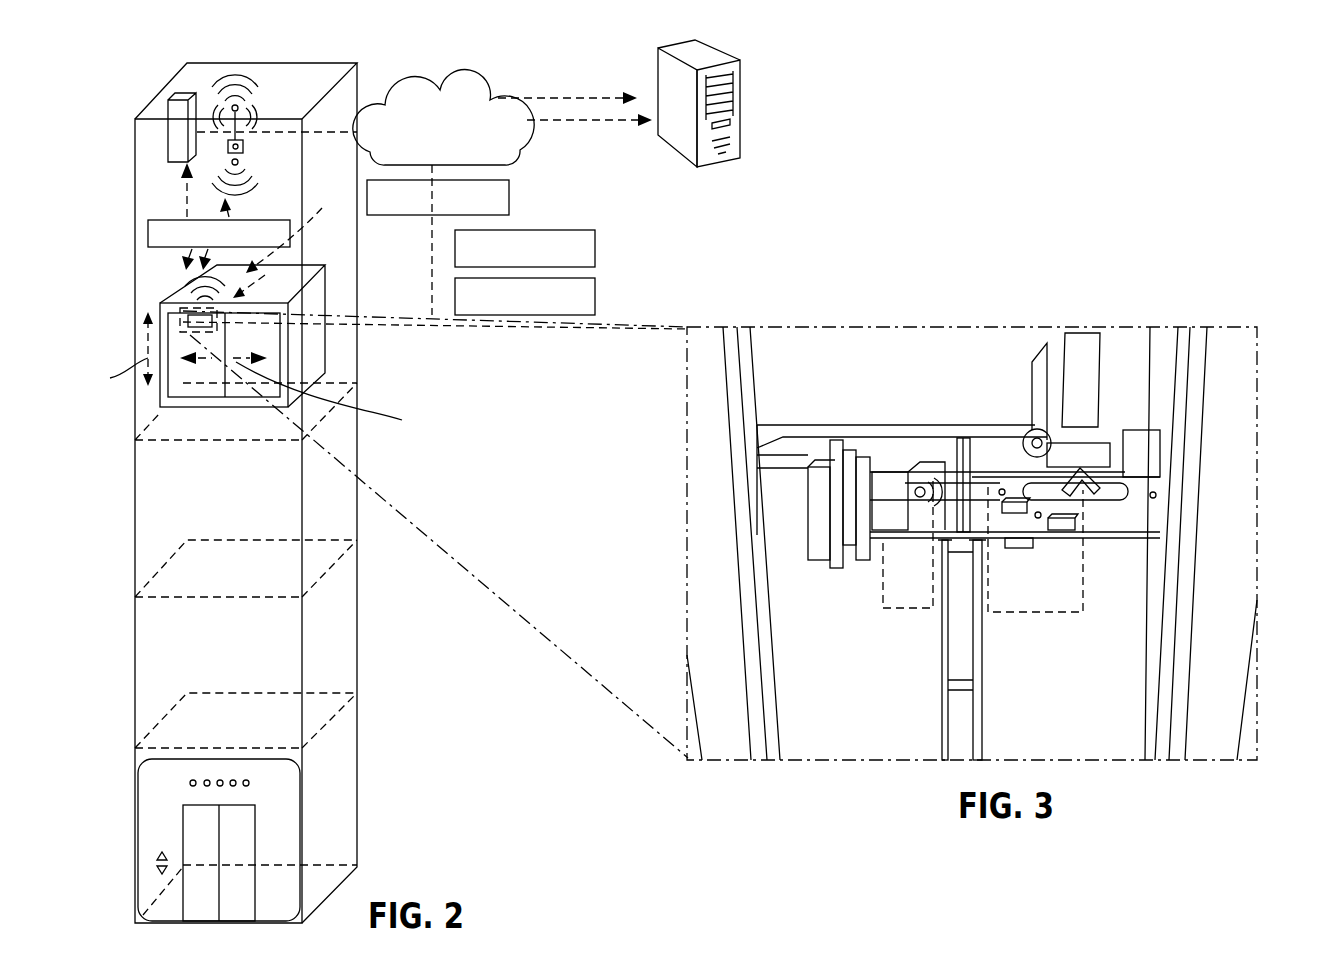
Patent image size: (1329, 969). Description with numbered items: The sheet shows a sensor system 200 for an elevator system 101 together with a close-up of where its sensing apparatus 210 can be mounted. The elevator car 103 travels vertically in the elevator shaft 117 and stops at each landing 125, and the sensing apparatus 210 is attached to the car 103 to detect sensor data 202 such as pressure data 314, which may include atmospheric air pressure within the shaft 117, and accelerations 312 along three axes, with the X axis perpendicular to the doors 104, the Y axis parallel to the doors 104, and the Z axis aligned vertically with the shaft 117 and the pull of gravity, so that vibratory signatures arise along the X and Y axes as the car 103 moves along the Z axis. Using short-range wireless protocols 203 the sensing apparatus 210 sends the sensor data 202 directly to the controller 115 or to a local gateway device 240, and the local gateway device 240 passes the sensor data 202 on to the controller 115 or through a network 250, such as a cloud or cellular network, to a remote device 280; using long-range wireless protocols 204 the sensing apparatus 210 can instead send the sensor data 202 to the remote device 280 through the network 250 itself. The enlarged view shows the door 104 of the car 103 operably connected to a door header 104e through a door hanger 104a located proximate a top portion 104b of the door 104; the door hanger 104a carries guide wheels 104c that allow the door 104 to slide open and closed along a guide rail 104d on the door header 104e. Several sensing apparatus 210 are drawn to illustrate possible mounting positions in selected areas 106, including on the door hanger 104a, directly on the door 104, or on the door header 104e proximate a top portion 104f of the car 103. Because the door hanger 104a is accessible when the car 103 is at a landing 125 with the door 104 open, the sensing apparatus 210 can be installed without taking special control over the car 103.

In FIG. 2, the sensor system 200 is at (93, 136).
In FIG. 2, the elevator system 101 is at (100, 466).
In FIG. 2, the controller 115 is at (172, 103).
In FIG. 2, the elevator shaft 117 is at (173, 200).
In FIG. 2, the local gateway device 240 is at (244, 146).
In FIG. 2, the sensor data 202 is at (148, 236).
In FIG. 2, the short-range wireless protocols 203 is at (195, 250).
In FIG. 2, the sensing apparatus 210 is at (185, 324).
In FIG. 3, the sensing apparatus 210 is at (1012, 502).
In FIG. 2, the elevator car 103 is at (168, 393).
In FIG. 2, the door 104 is at (185, 380).
In FIG. 3, the door 104 is at (876, 762).
In FIG. 2, the landing 125 is at (200, 443).
In FIG. 2, the long-range wireless protocols 204 is at (402, 325).
In FIG. 2, the network 250 is at (530, 132).
In FIG. 2, the remote device 280 is at (742, 146).
In FIG. 2, the accelerations 312 is at (595, 245).
In FIG. 2, the pressure data 314 is at (595, 297).
In FIG. 3, the door hanger 104a is at (1040, 520).
In FIG. 3, the top portion of the door 104b is at (1036, 546).
In FIG. 3, the guide wheels 104c is at (920, 510).
In FIG. 3, the guide rail 104d is at (978, 507).
In FIG. 3, the door header 104e is at (933, 470).
In FIG. 3, the top portion of the elevator car 104f is at (905, 448).
In FIG. 3, the selected areas 106 is at (997, 615).